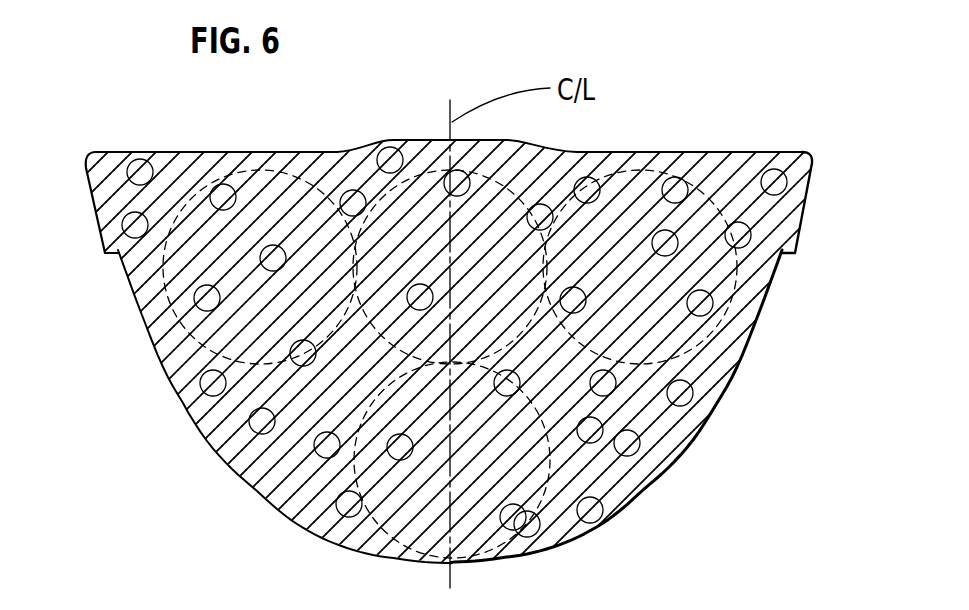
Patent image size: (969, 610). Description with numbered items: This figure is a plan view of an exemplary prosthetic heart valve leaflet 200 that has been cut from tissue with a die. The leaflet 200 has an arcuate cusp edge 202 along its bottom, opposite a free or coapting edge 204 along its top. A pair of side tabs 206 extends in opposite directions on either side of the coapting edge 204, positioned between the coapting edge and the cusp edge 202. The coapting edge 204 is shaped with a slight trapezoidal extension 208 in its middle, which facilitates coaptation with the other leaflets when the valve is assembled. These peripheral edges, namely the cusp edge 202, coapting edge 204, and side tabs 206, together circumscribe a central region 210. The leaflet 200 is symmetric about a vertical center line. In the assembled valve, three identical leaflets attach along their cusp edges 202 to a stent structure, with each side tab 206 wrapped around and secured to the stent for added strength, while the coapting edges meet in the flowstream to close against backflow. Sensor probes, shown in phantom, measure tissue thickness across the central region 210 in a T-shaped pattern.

The prosthetic heart valve leaflet 200 is at (178, 433).
The arcuate cusp edge 202 is at (237, 472).
The coapting edge 204 is at (212, 150).
The side tabs 206 is at (92, 203).
The trapezoidal extension 208 is at (370, 146).
The central region 210 is at (363, 377).